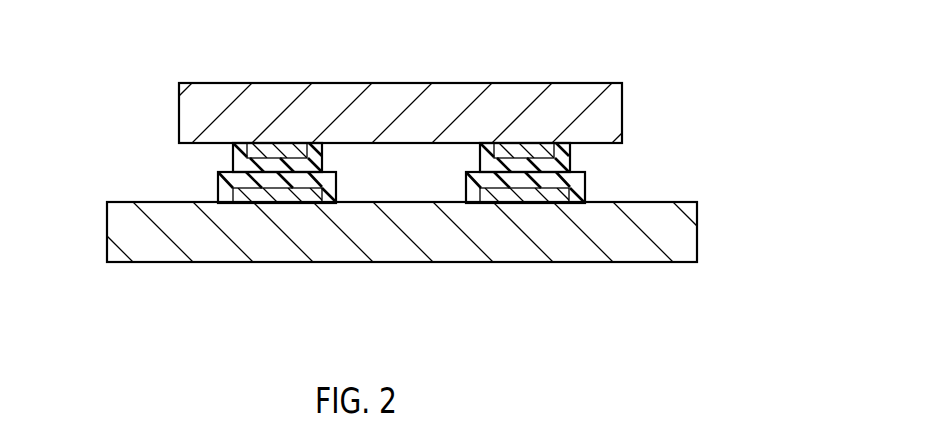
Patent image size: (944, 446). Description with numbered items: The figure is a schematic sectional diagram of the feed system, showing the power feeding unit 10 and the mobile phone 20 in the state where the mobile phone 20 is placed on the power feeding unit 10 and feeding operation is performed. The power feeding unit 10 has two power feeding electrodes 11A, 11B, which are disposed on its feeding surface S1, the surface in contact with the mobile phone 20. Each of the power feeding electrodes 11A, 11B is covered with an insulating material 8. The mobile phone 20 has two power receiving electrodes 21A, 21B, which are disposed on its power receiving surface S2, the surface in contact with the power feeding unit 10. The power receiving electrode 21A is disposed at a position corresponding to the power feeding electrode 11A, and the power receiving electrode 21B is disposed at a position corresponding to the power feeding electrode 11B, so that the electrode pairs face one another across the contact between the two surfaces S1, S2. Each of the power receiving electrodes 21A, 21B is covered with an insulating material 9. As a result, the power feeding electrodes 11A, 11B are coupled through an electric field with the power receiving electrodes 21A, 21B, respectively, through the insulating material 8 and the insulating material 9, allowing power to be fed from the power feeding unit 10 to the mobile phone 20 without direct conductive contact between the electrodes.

The mobile phone 20 is at (613, 113).
The power feeding unit 10 is at (688, 232).
The feeding surface S1 is at (120, 201).
The power receiving surface S2 is at (207, 144).
The insulating material 9 is at (312, 150).
The insulating material 8 is at (330, 197).
The power receiving electrode 21A is at (257, 150).
The power receiving electrode 21B is at (503, 150).
The power feeding electrode 11A is at (268, 203).
The power feeding electrode 11B is at (517, 203).